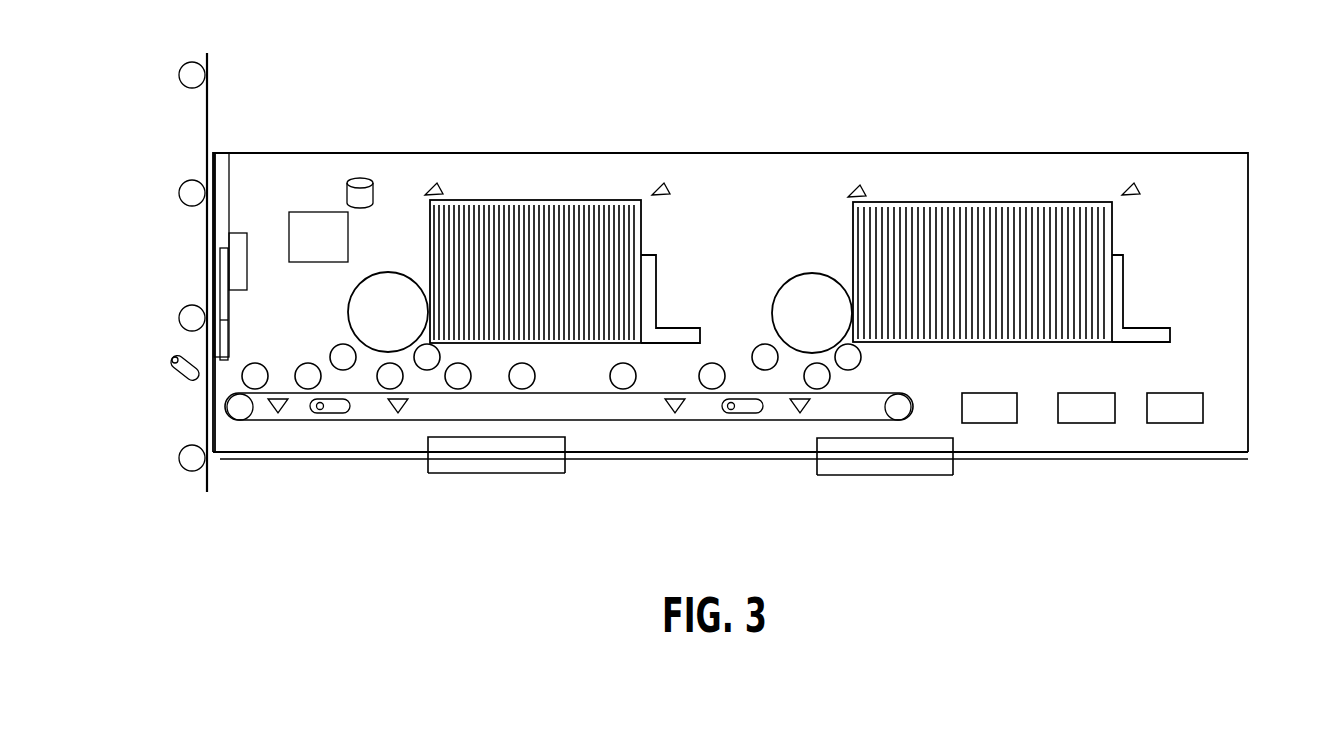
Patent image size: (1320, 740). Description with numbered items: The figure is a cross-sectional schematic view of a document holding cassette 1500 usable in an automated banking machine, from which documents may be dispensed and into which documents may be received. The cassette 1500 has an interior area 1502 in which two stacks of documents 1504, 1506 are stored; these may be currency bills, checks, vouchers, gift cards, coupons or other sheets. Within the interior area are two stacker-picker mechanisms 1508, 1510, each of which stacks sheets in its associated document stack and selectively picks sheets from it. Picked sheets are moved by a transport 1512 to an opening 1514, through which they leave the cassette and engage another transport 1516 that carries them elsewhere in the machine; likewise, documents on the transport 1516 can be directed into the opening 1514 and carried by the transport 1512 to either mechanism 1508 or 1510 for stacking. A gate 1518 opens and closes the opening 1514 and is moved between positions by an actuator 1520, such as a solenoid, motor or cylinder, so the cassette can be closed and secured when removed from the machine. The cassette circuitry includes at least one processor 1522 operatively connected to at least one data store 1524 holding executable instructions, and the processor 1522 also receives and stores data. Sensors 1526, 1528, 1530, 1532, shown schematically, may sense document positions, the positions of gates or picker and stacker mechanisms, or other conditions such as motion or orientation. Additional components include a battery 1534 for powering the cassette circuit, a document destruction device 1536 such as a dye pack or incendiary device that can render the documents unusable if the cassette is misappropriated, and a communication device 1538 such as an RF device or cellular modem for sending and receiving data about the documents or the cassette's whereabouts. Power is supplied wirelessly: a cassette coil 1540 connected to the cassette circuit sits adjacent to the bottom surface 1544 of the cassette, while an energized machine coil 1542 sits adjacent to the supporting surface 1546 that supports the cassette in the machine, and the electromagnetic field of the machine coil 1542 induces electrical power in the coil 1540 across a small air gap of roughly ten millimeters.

The cassette 1500 is at (1000, 130).
The interior area 1502 is at (1217, 176).
The stack of documents 1504 is at (538, 205).
The stack of documents 1506 is at (910, 194).
The stacker-picker mechanism 1508 is at (370, 325).
The stacker-picker mechanism 1510 is at (805, 298).
The transport 1512 is at (642, 397).
The opening 1514 is at (207, 422).
The transport 1516 is at (207, 92).
The gate 1518 is at (216, 274).
The actuator 1520 is at (247, 235).
The processor 1522 is at (307, 213).
The data store 1524 is at (375, 192).
The sensor 1526 is at (437, 186).
The sensor 1528 is at (665, 186).
The sensor 1530 is at (860, 188).
The sensor 1532 is at (1133, 187).
The battery 1534 is at (1188, 424).
The document destruction device 1536 is at (1090, 424).
The communication device 1538 is at (1000, 424).
The coil 1540 is at (428, 440).
The machine coil 1542 is at (485, 475).
The bottom surface 1544 is at (272, 453).
The supporting surface 1546 is at (744, 461).